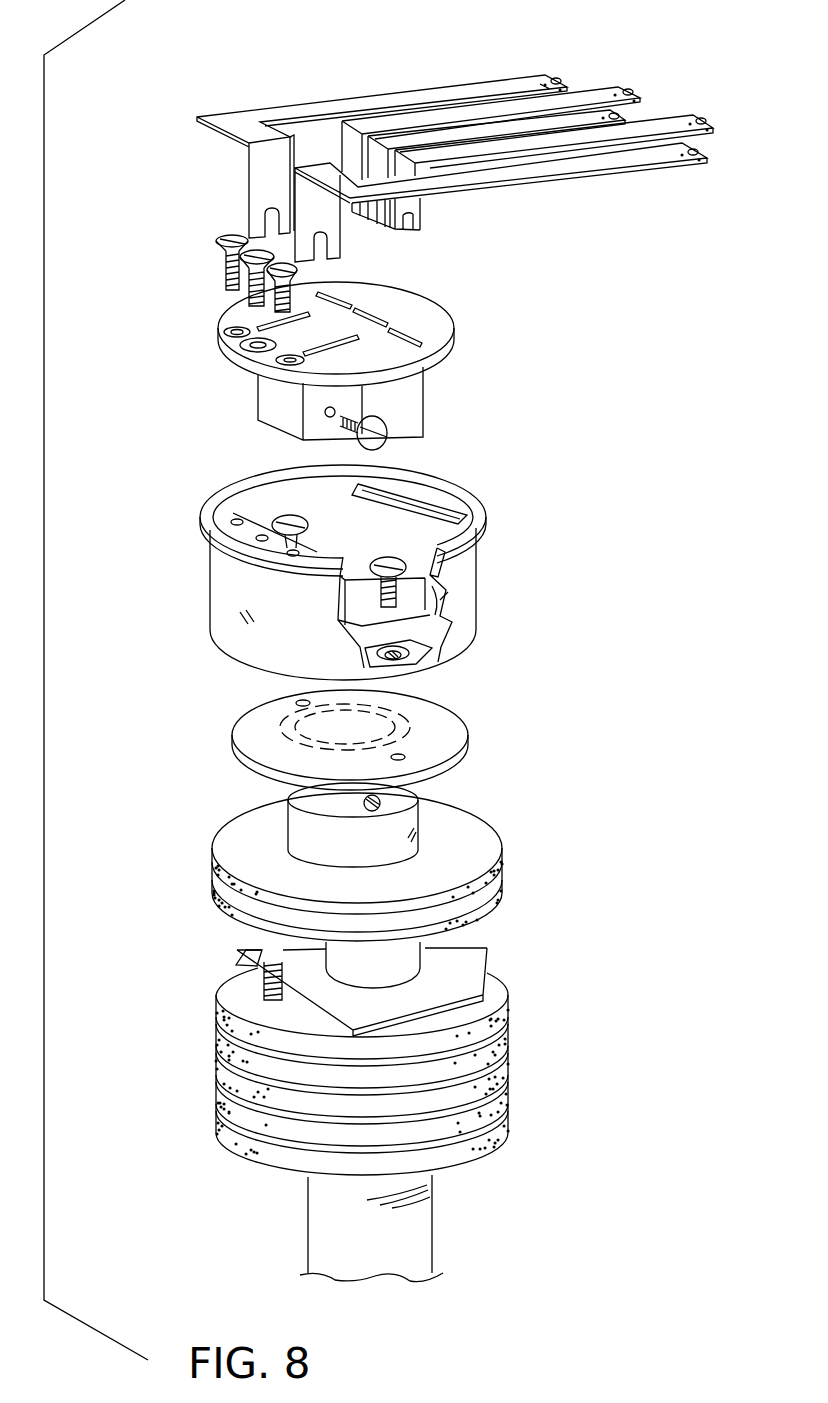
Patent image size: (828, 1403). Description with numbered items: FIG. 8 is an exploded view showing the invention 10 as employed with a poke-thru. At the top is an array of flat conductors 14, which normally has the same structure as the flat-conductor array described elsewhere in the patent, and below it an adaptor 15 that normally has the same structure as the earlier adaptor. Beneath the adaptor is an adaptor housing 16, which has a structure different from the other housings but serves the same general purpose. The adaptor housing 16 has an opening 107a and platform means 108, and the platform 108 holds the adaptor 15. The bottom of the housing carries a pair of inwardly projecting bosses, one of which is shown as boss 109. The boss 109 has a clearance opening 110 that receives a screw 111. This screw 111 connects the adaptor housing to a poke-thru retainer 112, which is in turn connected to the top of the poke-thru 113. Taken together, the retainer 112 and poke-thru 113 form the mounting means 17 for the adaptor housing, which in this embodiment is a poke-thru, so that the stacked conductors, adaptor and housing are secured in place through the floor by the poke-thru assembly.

The electrical receptacle assembly 10 is at (283, 73).
The array of flat conductors 14 is at (228, 190).
The adaptor 15 is at (237, 380).
The adaptor housing 16 is at (206, 604).
The opening 107a is at (420, 603).
The platform means 108 is at (433, 511).
The boss 109 is at (420, 650).
The clearance opening 110 is at (393, 656).
The screw 111 is at (396, 557).
The poke-thru retainer 112 is at (453, 730).
The mounting means 17 is at (217, 962).
The poke-thru 113 is at (520, 992).